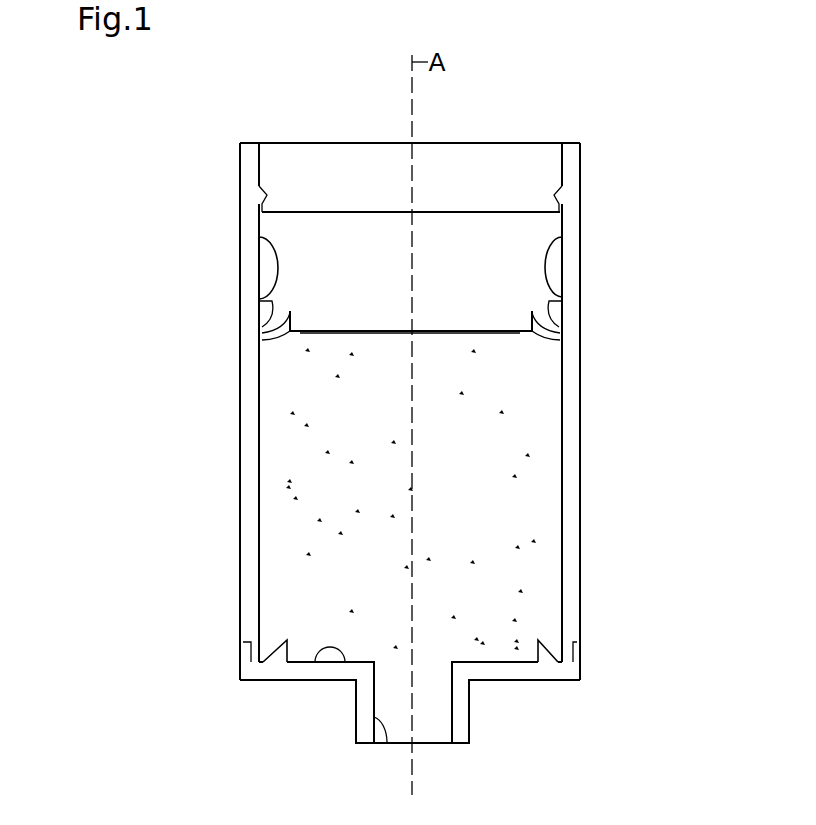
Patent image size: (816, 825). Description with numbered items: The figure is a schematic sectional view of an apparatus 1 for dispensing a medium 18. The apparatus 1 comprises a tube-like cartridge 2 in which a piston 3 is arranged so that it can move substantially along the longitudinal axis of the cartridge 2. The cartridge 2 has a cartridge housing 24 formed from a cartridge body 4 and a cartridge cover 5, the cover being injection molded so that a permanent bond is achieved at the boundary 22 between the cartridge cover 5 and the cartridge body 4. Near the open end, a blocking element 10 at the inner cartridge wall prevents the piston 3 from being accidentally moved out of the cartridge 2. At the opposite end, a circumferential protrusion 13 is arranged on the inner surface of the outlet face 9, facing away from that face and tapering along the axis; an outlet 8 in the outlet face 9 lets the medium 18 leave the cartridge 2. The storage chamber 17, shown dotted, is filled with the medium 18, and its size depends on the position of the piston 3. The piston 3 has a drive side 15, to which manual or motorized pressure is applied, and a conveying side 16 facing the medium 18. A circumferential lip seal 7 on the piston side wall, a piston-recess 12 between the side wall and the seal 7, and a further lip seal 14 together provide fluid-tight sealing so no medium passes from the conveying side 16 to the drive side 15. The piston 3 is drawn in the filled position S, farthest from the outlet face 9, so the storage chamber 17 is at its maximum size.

The apparatus 1 is at (607, 203).
The cartridge 2 is at (583, 578).
The piston 3 is at (375, 247).
The cartridge body 4 is at (570, 527).
The cartridge cover 5 is at (497, 668).
The seal 7 is at (272, 320).
The outlet 8 is at (389, 745).
The outlet face 9 is at (318, 650).
The blocking element 10 is at (266, 193).
The piston-recess 12 is at (283, 330).
The protrusion 13 is at (287, 648).
The further seal 14 is at (265, 300).
The drive side 15 is at (347, 211).
The conveying side 16 is at (340, 333).
The storage chamber 17 is at (515, 462).
The medium 18 is at (297, 480).
The boundary 22 is at (255, 661).
The cartridge housing 24 is at (247, 583).
The filled position S is at (448, 207).